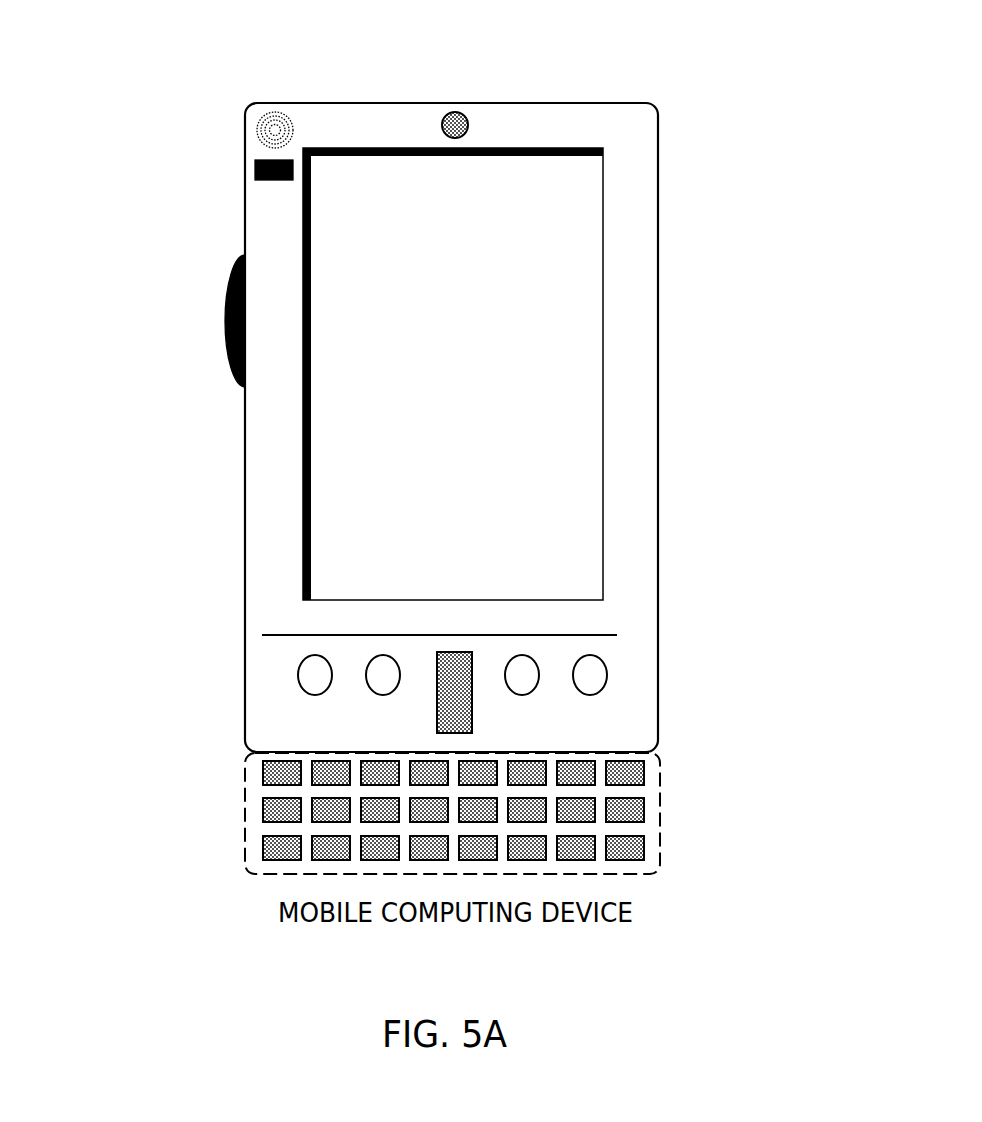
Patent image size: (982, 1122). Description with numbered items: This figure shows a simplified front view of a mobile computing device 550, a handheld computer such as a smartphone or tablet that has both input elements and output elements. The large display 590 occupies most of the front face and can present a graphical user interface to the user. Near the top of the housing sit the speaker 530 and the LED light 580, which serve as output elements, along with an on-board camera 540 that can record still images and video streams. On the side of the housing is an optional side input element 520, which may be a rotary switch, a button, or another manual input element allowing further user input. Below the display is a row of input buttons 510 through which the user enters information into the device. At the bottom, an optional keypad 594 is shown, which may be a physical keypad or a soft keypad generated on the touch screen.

The input buttons 510 is at (593, 688).
The side input element 520 is at (220, 332).
The speaker 530 is at (257, 118).
The on-board camera 540 is at (465, 118).
The mobile computing device 550 is at (658, 122).
The LED light 580 is at (255, 163).
The display 590 is at (330, 533).
The keypad 594 is at (243, 845).